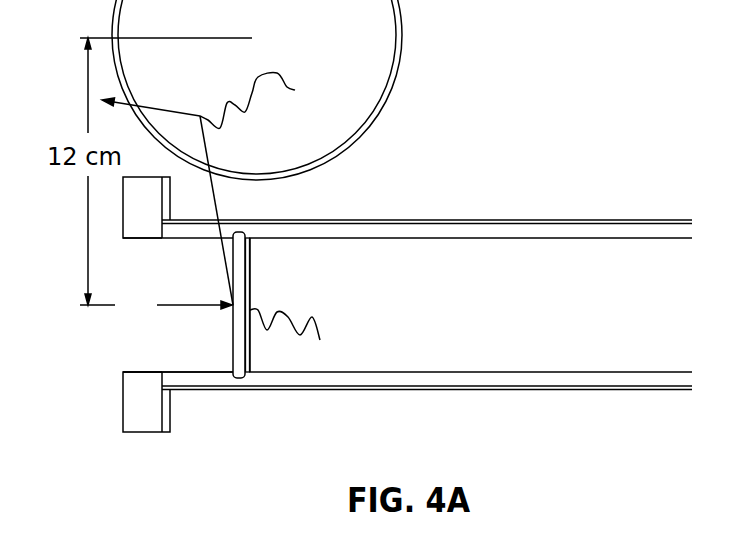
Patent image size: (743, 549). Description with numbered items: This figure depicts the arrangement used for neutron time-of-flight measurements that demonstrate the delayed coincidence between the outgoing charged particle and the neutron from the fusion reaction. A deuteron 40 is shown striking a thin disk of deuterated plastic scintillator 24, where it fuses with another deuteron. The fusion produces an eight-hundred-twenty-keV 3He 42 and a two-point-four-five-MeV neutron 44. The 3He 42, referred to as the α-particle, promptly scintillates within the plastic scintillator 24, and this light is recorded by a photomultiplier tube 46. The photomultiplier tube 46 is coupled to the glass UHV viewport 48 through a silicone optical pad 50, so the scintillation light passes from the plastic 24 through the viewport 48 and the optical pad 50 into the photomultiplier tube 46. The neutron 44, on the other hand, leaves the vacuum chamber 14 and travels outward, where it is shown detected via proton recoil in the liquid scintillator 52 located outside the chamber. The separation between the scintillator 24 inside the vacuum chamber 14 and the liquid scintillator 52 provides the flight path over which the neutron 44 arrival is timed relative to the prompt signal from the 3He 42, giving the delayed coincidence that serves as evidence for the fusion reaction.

The vacuum chamber 14 is at (143, 348).
The deuterated plastic scintillator 24 is at (228, 354).
The deuteron 40 is at (133, 313).
The 3He 42 is at (297, 335).
The neutron 44 is at (253, 74).
The photomultiplier tube 46 is at (508, 338).
The glass UHV viewport 48 is at (247, 298).
The silicone optical pad 50 is at (240, 282).
The liquid scintillator 52 is at (352, 115).